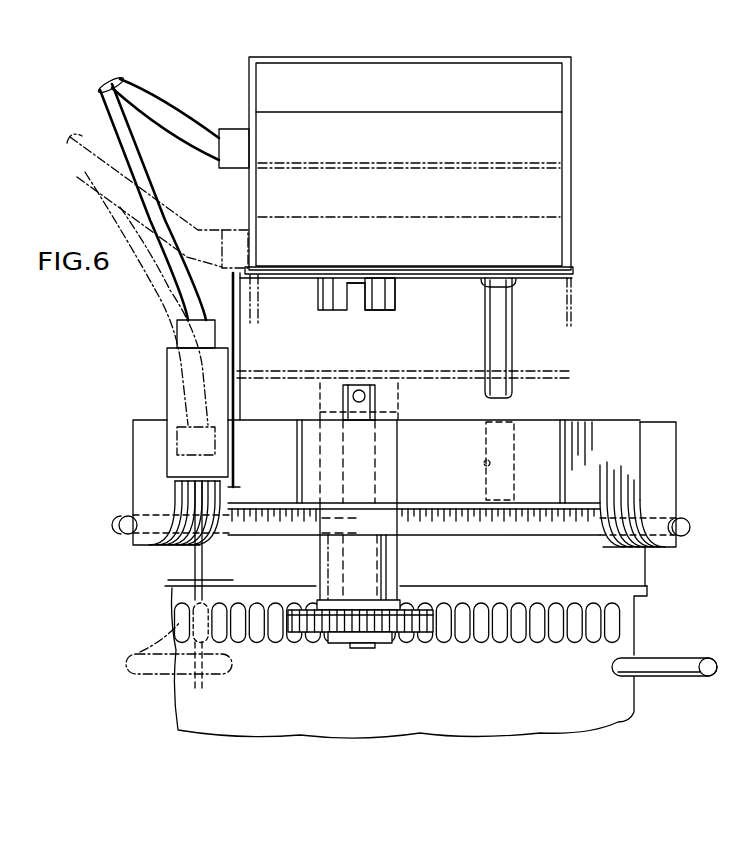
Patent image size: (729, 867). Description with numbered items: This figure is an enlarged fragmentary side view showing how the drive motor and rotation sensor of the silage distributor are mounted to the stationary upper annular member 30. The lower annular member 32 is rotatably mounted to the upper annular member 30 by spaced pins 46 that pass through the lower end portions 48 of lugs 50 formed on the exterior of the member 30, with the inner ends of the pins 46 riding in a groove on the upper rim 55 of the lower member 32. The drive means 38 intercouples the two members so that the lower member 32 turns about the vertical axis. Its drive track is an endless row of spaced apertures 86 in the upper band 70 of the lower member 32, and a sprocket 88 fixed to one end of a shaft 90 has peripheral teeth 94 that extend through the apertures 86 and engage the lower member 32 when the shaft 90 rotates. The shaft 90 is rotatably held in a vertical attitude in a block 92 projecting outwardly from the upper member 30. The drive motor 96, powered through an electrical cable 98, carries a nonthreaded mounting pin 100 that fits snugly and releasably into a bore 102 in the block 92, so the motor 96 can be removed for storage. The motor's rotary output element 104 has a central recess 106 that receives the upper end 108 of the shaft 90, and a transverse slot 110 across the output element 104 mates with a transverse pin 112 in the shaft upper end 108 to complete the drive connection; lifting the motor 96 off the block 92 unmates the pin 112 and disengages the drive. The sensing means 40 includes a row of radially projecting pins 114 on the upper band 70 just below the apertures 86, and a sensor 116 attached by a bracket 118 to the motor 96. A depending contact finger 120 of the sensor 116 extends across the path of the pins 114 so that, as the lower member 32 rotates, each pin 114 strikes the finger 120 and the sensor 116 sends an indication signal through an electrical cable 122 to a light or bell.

The drive means 38 is at (392, 56).
The drive motor 96 is at (474, 72).
The electrical cable 98 is at (172, 122).
The electrical cable 122 is at (104, 124).
The central recess 106 is at (377, 280).
The rotary output element 104 is at (397, 300).
The transverse slot 110 is at (360, 292).
The bracket 118 is at (236, 344).
The sensor 116 is at (168, 406).
The sensing means 40 is at (187, 400).
The transverse pin 112 is at (358, 390).
The upper end of the shaft 108 is at (366, 408).
The mounting pin 100 is at (487, 353).
The bore 102 is at (484, 464).
The mounting block 92 is at (553, 420).
The upper annular member 30 is at (624, 416).
The lugs 50 is at (133, 440).
The pins 46 is at (119, 523).
The lower end portions 48 is at (152, 547).
The upper rim 55 is at (650, 558).
The lower annular member 32 is at (652, 588).
The contact finger 120 is at (196, 566).
The pins 114 is at (125, 660).
The shaft 90 is at (376, 455).
The peripheral teeth 94 is at (311, 636).
The sprocket 88 is at (393, 640).
The apertures 86 is at (518, 642).
The upper band 70 is at (600, 713).